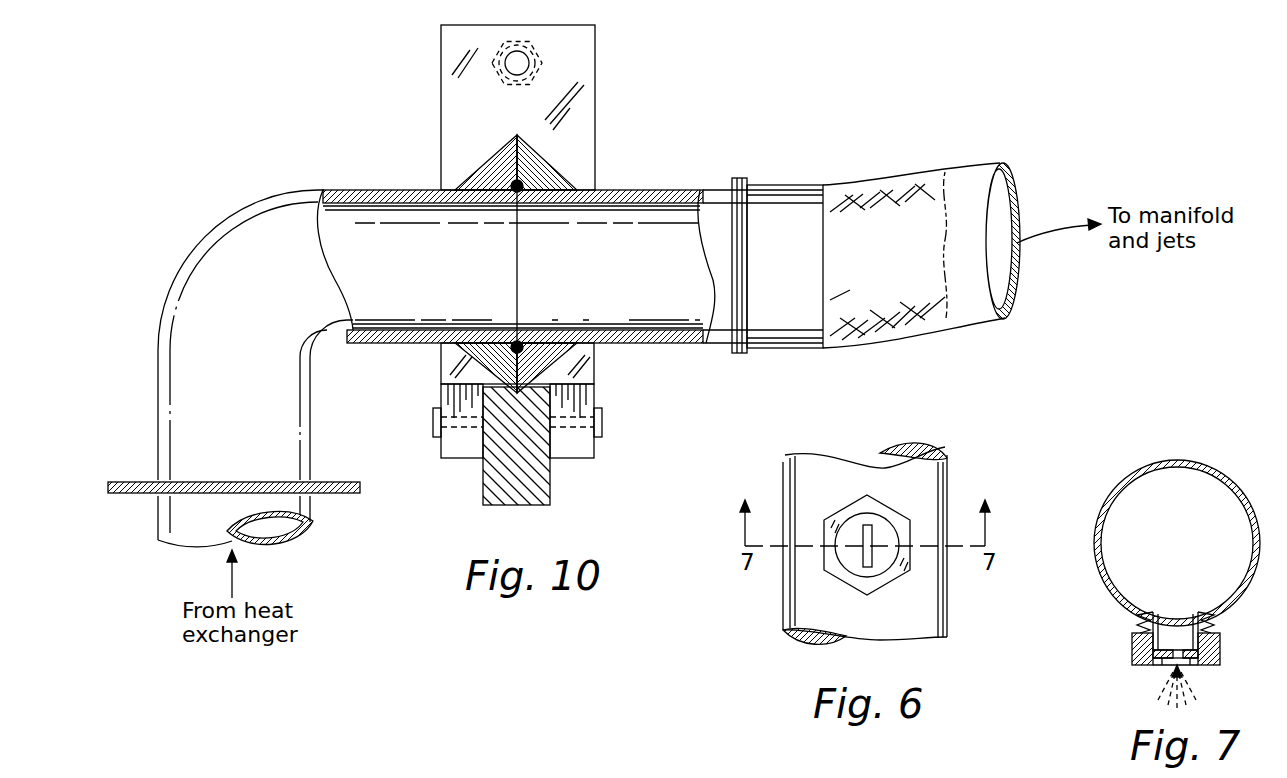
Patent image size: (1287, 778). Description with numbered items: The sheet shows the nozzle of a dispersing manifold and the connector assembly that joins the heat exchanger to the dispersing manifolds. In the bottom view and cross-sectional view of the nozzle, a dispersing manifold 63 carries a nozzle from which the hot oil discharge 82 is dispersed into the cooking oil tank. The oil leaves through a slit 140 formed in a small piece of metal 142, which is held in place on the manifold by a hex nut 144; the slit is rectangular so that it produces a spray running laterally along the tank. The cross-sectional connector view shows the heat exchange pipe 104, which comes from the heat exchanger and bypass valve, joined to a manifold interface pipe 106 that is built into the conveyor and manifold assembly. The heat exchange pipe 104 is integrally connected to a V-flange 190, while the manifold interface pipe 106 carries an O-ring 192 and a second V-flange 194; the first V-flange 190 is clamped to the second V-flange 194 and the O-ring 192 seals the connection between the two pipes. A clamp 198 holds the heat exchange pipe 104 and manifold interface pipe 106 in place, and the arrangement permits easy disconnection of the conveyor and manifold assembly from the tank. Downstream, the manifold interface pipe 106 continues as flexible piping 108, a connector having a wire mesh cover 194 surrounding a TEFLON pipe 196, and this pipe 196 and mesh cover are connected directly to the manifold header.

In FIG. 10, the heat exchange pipe 104 is at (233, 223).
In FIG. 10, the manifold interface pipe 106 is at (672, 190).
In FIG. 10, the flexible piping 108 is at (871, 185).
In FIG. 10, the V-flange 190 is at (483, 168).
In FIG. 10, the O-ring 192 is at (525, 186).
In FIG. 10, the second V-flange 194 is at (545, 183).
In FIG. 10, the TEFLON pipe 196 is at (972, 171).
In FIG. 10, the clamp 198 is at (596, 368).
In FIG. 6, the dispersing manifold 63 is at (840, 488).
In FIG. 7, the dispersing manifold 63 is at (1136, 477).
In FIG. 6, the slit 140 is at (868, 527).
In FIG. 7, the slit 140 is at (1203, 633).
In FIG. 6, the small piece of metal 142 is at (877, 560).
In FIG. 7, the small piece of metal 142 is at (1218, 655).
In FIG. 6, the hex nut 144 is at (905, 518).
In FIG. 7, the hex nut 144 is at (1193, 660).
In FIG. 7, the hot oil discharge 82 is at (1160, 682).